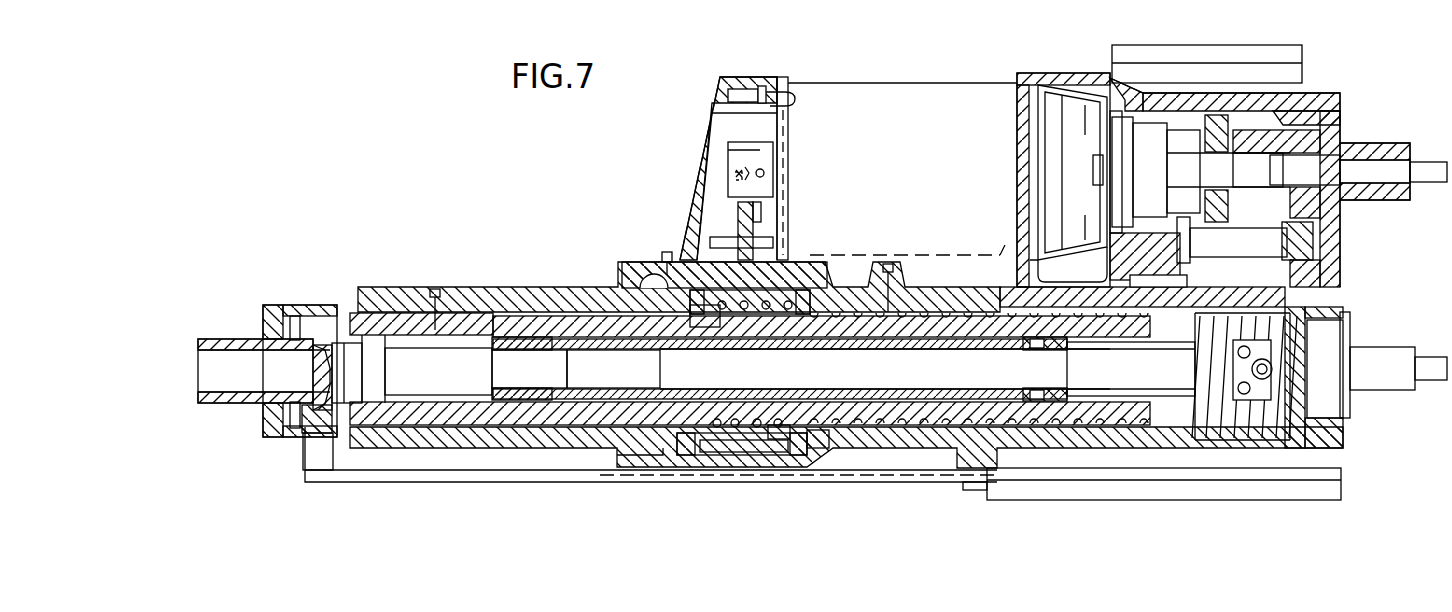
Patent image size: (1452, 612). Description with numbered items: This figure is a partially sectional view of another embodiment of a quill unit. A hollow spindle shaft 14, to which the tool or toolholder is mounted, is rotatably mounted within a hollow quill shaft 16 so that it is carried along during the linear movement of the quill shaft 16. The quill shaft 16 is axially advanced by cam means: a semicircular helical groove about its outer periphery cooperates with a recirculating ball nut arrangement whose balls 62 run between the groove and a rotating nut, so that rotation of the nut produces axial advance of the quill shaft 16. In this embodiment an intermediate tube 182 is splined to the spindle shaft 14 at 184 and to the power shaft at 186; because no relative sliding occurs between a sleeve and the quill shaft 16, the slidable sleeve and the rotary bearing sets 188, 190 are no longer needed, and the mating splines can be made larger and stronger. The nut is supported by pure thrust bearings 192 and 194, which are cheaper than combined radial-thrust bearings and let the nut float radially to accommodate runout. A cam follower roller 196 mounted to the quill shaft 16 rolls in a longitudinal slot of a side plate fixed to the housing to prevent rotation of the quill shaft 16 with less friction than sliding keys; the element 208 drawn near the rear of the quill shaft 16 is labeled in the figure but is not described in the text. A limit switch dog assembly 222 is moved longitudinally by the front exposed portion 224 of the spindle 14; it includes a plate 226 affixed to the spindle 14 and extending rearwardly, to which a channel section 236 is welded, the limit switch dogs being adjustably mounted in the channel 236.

The spindle shaft 14 is at (206, 405).
The quill shaft 16 is at (880, 413).
The balls 62 is at (735, 427).
The intermediate tube 182 is at (640, 348).
The spline connection to spindle shaft 184 is at (540, 385).
The spline connection to power shaft 186 is at (1028, 386).
The rotary bearing set 188 is at (1038, 388).
The rotary bearing set 190 is at (1096, 366).
The thrust bearing 192 is at (657, 262).
The thrust bearing 194 is at (803, 458).
The cam follower roller 196 is at (1272, 383).
The threaded section 208 is at (1226, 377).
The limit switch dog assembly 222 is at (568, 484).
The front exposed portion of the spindle 224 is at (290, 438).
The plate 226 is at (356, 483).
The channel section 236 is at (1136, 500).